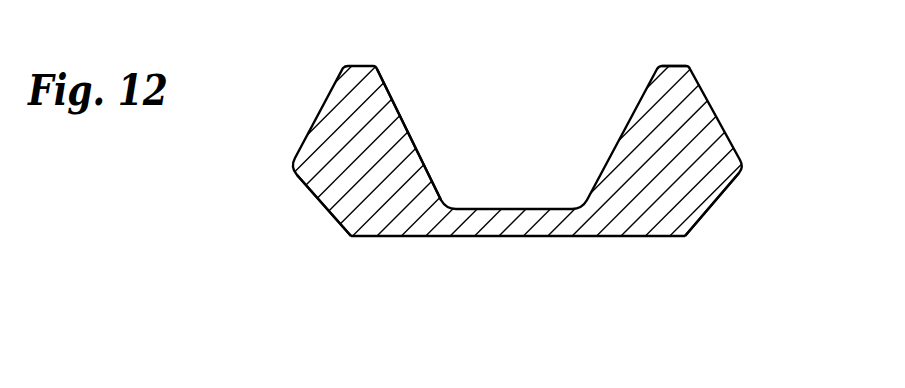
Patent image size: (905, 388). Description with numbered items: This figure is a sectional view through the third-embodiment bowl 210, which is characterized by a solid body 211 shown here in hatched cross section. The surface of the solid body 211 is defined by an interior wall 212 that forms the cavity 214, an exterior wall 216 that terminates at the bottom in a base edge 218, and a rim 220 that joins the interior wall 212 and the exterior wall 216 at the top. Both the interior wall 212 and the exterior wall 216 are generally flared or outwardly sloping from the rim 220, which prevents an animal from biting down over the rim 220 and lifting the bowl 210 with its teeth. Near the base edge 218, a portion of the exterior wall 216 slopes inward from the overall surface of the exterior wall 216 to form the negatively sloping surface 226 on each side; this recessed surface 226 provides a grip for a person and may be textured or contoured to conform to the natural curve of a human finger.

The bowl 210 is at (743, 91).
The solid body 211 is at (338, 110).
The interior wall 212 is at (647, 87).
The cavity 214 is at (540, 178).
The exterior wall 216 is at (397, 108).
The base edge 218 is at (349, 237).
The rim 220 is at (678, 63).
The negatively sloping surface 226 is at (321, 203).